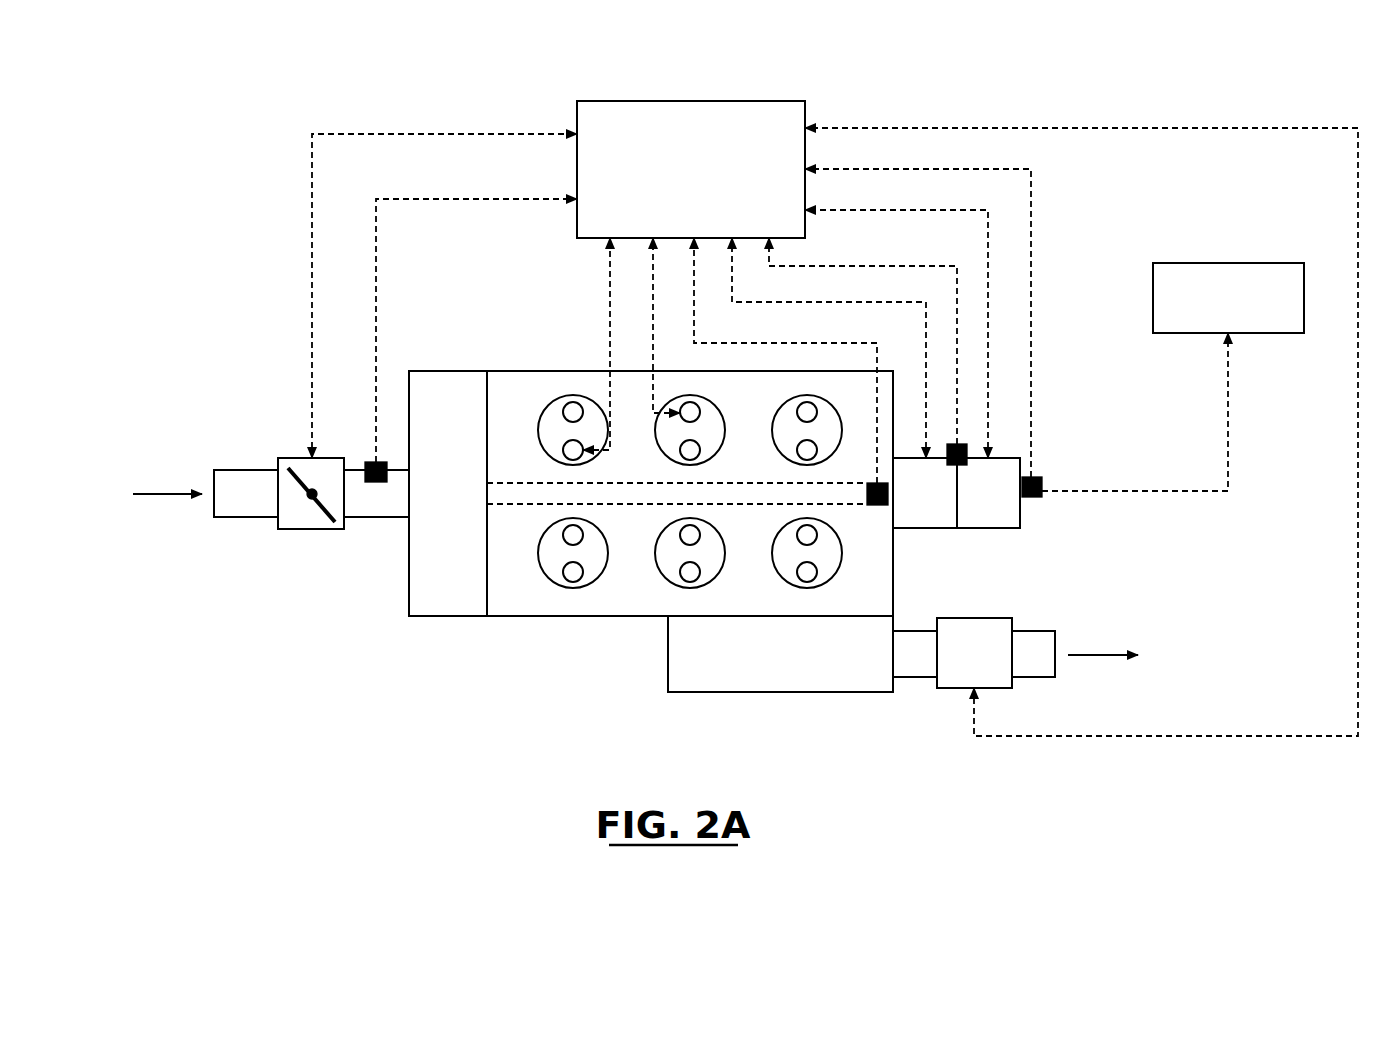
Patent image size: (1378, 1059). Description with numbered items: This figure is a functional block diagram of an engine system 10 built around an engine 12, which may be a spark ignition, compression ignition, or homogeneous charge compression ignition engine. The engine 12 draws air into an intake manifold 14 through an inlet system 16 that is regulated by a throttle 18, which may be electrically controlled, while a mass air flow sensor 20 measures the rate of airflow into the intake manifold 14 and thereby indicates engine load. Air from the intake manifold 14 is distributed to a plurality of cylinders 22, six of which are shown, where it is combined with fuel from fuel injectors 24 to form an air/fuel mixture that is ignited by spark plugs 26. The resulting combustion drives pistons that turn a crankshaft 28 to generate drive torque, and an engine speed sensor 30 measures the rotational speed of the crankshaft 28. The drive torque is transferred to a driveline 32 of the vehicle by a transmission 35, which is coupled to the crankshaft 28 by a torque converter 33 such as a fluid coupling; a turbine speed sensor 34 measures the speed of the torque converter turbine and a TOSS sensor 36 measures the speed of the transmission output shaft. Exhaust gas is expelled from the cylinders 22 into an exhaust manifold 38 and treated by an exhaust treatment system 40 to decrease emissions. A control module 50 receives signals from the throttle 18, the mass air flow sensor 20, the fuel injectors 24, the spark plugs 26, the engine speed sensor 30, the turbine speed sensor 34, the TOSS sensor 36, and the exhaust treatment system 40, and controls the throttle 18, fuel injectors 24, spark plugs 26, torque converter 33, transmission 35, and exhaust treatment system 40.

The engine system 10 is at (222, 92).
The engine 12 is at (614, 616).
The intake manifold 14 is at (448, 616).
The inlet system 16 is at (245, 468).
The throttle 18 is at (312, 529).
The mass air flow sensor 20 is at (376, 482).
The cylinders 22 is at (552, 589).
The fuel injectors 24 is at (797, 535).
The spark plugs 26 is at (807, 583).
The crankshaft 28 is at (677, 495).
The engine speed sensor 30 is at (877, 505).
The driveline 32 is at (1229, 263).
The torque converter 33 is at (928, 528).
The turbine speed sensor 34 is at (957, 465).
The transmission 35 is at (990, 528).
The TOSS sensor 36 is at (1032, 497).
The exhaust manifold 38 is at (780, 692).
The exhaust treatment system 40 is at (946, 688).
The control module 50 is at (700, 101).